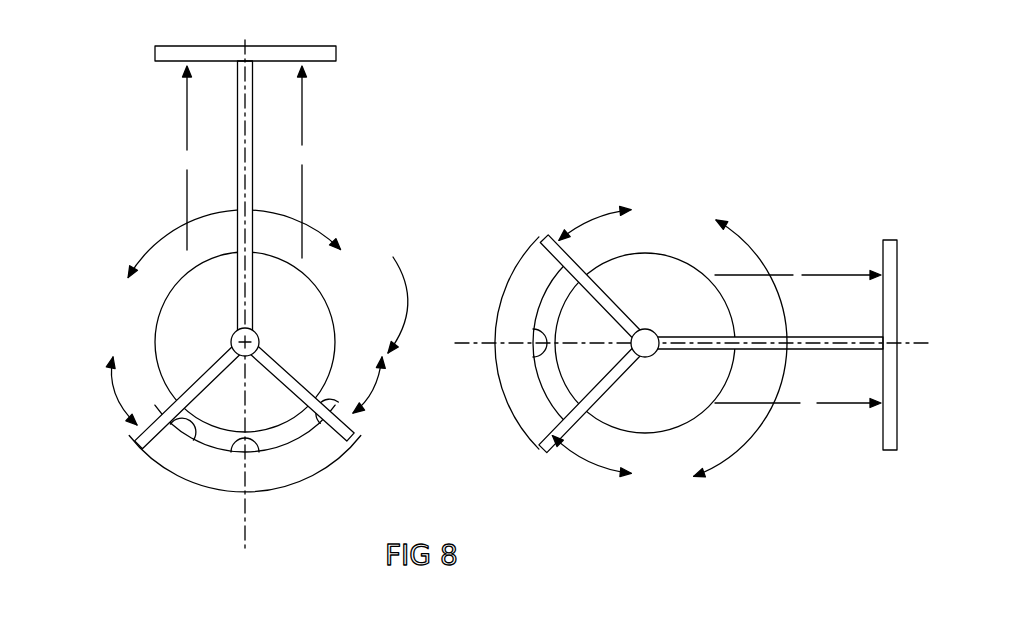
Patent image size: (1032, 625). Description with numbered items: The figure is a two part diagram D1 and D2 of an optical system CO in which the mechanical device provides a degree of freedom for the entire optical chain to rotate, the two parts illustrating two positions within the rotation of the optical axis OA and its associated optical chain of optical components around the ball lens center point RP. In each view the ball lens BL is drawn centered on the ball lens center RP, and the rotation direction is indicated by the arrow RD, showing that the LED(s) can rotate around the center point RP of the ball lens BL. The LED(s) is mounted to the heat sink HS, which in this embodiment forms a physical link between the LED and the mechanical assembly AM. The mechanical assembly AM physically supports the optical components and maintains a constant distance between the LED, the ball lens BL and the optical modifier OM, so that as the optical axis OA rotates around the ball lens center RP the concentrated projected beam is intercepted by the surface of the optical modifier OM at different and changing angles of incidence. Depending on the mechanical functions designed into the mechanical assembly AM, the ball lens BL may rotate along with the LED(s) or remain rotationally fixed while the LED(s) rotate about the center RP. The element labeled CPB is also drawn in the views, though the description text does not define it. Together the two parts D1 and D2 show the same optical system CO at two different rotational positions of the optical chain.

The optical modifier OM is at (344, 53).
The connecting push bars CPB is at (200, 175).
The first part of two part diagram D1 is at (390, 212).
The second part of two part diagram D2 is at (808, 170).
The rotation arrow RD is at (334, 242).
The ball lens BL is at (330, 306).
The ball lens center point RP is at (232, 333).
The mechanical assembly AM is at (182, 448).
The heat sink HS is at (303, 465).
The optical axis OA is at (243, 507).
The optical system CO is at (583, 93).